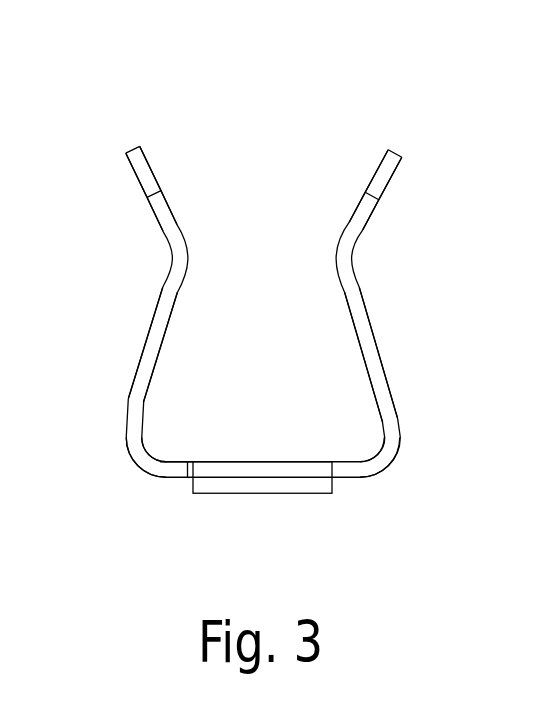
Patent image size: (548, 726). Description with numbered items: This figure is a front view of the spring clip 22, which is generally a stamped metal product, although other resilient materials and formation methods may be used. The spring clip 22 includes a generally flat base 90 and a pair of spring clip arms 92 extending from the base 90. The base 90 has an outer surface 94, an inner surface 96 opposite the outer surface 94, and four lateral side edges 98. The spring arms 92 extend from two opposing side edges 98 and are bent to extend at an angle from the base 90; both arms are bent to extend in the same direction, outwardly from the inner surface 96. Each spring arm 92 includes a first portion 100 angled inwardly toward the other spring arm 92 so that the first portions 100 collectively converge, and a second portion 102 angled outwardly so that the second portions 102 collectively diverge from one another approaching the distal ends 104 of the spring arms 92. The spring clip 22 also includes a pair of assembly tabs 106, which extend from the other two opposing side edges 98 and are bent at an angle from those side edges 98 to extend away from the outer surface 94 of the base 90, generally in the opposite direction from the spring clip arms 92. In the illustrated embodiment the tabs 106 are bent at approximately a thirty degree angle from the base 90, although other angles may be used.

The spring clip 22 is at (239, 287).
The base 90 is at (170, 474).
The spring clip arms 92 is at (378, 349).
The outer surface 94 is at (348, 477).
The inner surface 96 is at (183, 462).
The lateral side edges 98 is at (188, 477).
The first portion 100 is at (161, 301).
The second portion 102 is at (150, 192).
The distal ends 104 is at (127, 152).
The assembly tabs 106 is at (277, 493).